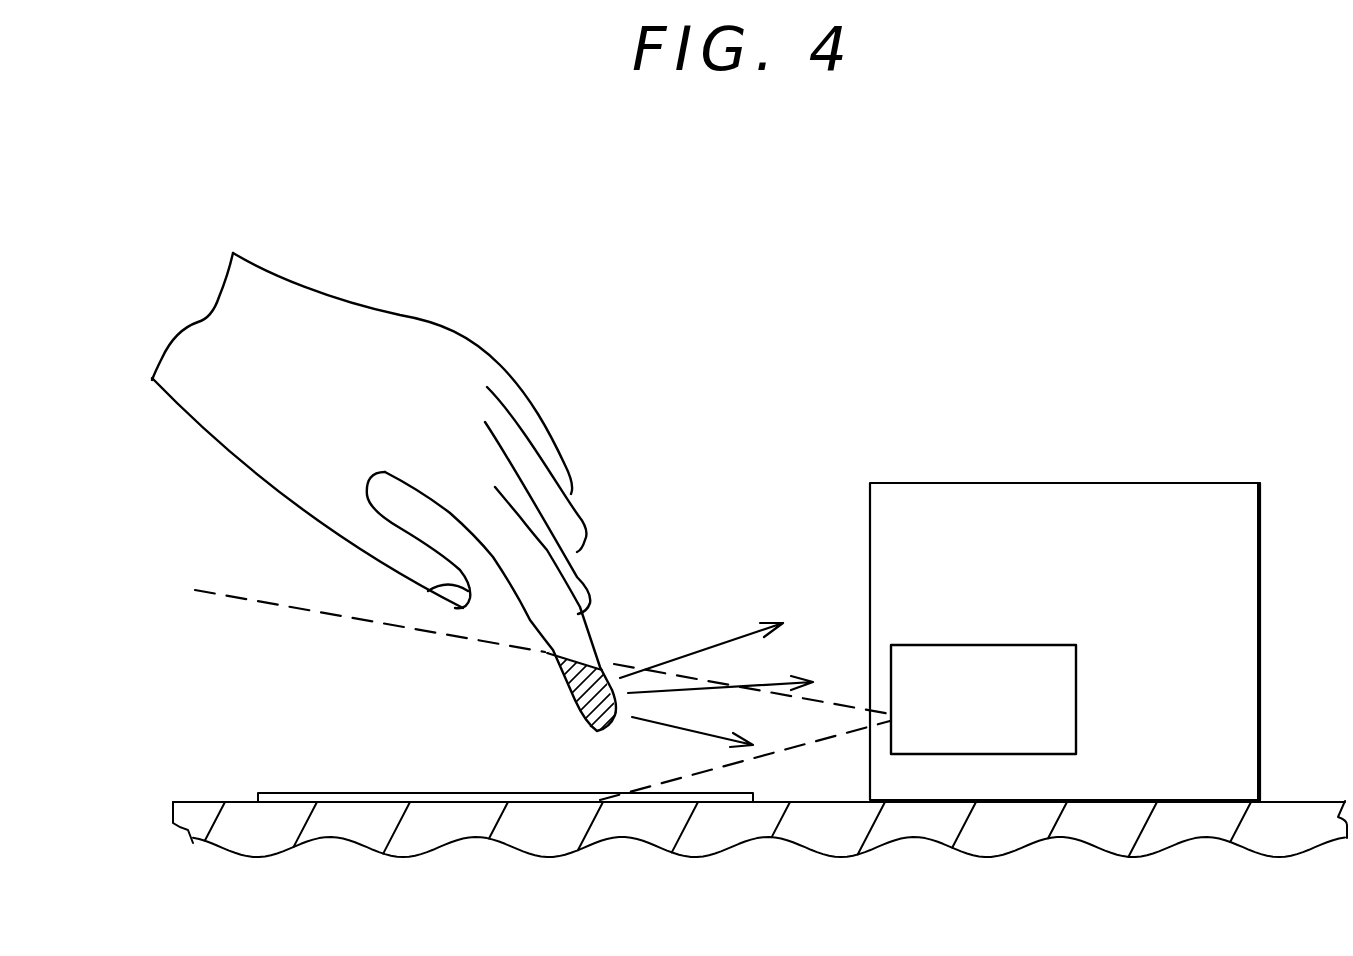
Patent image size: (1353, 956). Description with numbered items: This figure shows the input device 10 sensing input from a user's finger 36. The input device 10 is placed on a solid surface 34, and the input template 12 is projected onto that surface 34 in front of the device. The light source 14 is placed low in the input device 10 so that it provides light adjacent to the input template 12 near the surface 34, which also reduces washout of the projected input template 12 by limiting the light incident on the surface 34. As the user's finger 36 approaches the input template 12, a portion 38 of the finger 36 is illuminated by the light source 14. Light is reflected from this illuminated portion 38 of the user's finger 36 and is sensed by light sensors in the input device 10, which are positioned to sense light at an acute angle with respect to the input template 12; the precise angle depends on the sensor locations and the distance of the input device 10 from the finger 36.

The input device 10 is at (918, 480).
The input template 12 is at (388, 790).
The light source 14 is at (1076, 686).
The solid surface 34 is at (238, 802).
The user's finger 36 is at (575, 633).
The illuminated portion 38 is at (607, 672).